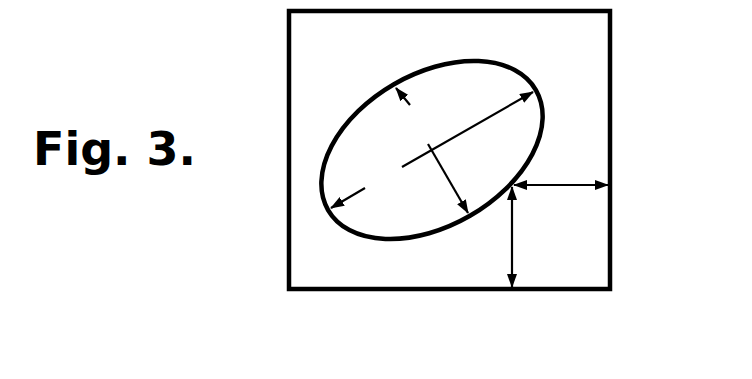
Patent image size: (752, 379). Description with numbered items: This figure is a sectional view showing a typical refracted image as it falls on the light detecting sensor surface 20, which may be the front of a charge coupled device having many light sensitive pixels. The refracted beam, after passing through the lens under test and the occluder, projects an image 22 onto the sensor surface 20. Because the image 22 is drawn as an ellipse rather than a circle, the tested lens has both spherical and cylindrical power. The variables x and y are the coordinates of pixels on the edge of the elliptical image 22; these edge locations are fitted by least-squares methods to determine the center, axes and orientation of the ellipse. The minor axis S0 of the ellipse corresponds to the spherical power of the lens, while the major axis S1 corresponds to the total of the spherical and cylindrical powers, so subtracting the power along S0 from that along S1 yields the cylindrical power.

The sensor surface 20 is at (601, 34).
The projected image 22 is at (365, 242).
The minor axis S0 is at (432, 150).
The major axis S1 is at (432, 150).
The x coordinate x is at (561, 168).
The y coordinate y is at (496, 237).